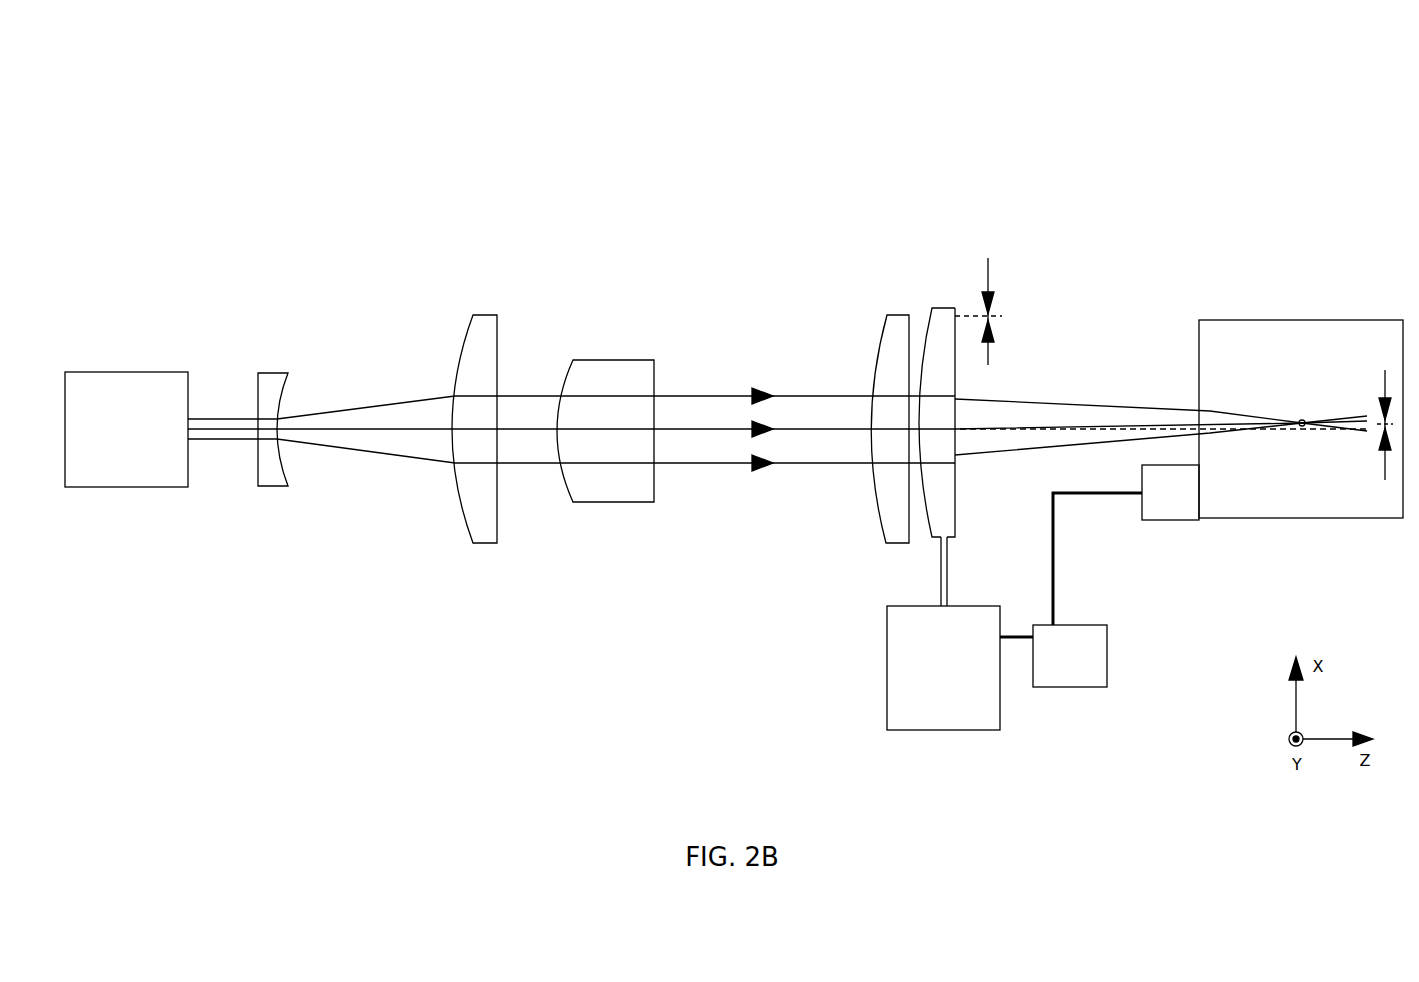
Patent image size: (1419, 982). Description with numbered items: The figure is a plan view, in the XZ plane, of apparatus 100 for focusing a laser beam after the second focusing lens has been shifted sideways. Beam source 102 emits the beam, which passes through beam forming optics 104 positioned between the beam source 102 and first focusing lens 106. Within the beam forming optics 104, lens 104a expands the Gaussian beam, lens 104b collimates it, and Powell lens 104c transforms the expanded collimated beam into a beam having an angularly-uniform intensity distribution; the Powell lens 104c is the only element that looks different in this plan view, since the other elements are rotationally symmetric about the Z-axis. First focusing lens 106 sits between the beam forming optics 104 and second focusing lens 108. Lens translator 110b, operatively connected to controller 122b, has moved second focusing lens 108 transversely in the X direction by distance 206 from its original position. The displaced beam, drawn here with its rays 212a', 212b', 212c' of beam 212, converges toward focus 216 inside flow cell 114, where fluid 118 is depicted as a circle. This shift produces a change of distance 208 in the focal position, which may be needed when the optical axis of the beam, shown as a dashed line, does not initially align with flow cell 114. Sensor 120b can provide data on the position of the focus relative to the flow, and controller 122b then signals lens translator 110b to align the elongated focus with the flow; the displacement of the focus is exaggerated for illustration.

The apparatus 100 is at (193, 121).
The beam source 102 is at (108, 372).
The beam forming optics 104 is at (456, 368).
The lens 104a is at (268, 373).
The lens 104b is at (483, 315).
The Powell lens 104c is at (577, 377).
The first focusing lens 106 is at (895, 315).
The second focusing lens 108 is at (935, 308).
The lens translator 110b is at (1000, 668).
The flow cell 114 is at (1358, 320).
The fluid 118 is at (1301, 428).
The sensor 120b is at (1167, 522).
The controller 122b is at (1107, 660).
The distance 206 is at (990, 318).
The distance 208 is at (1378, 432).
The deflected beams 212 is at (1161, 323).
The deflected upper beam 212a' is at (1161, 342).
The deflected central beam 212b' is at (1161, 341).
The deflected lower beam 212c' is at (1161, 354).
The converging beam 216 is at (1289, 438).